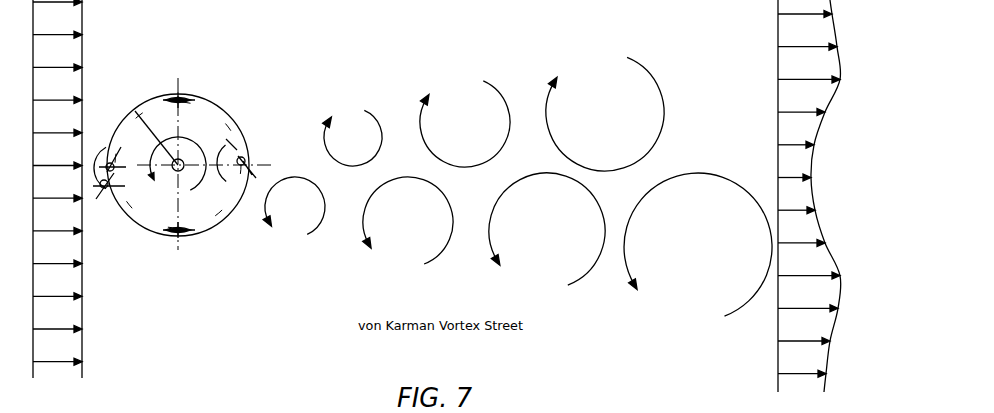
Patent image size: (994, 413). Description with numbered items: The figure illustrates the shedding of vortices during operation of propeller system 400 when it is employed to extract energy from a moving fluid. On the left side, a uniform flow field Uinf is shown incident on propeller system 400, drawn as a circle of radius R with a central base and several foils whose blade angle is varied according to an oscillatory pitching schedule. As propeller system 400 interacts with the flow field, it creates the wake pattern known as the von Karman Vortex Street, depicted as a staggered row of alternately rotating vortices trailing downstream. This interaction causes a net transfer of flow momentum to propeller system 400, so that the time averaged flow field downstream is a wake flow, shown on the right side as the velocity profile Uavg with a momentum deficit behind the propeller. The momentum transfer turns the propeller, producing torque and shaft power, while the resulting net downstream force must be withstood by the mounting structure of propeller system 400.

The propeller system 400 is at (182, 134).
The cylinder radius R is at (156, 138).
The free-stream velocity profile Uinf is at (57, 189).
The average downstream velocity profile Uavg is at (809, 196).